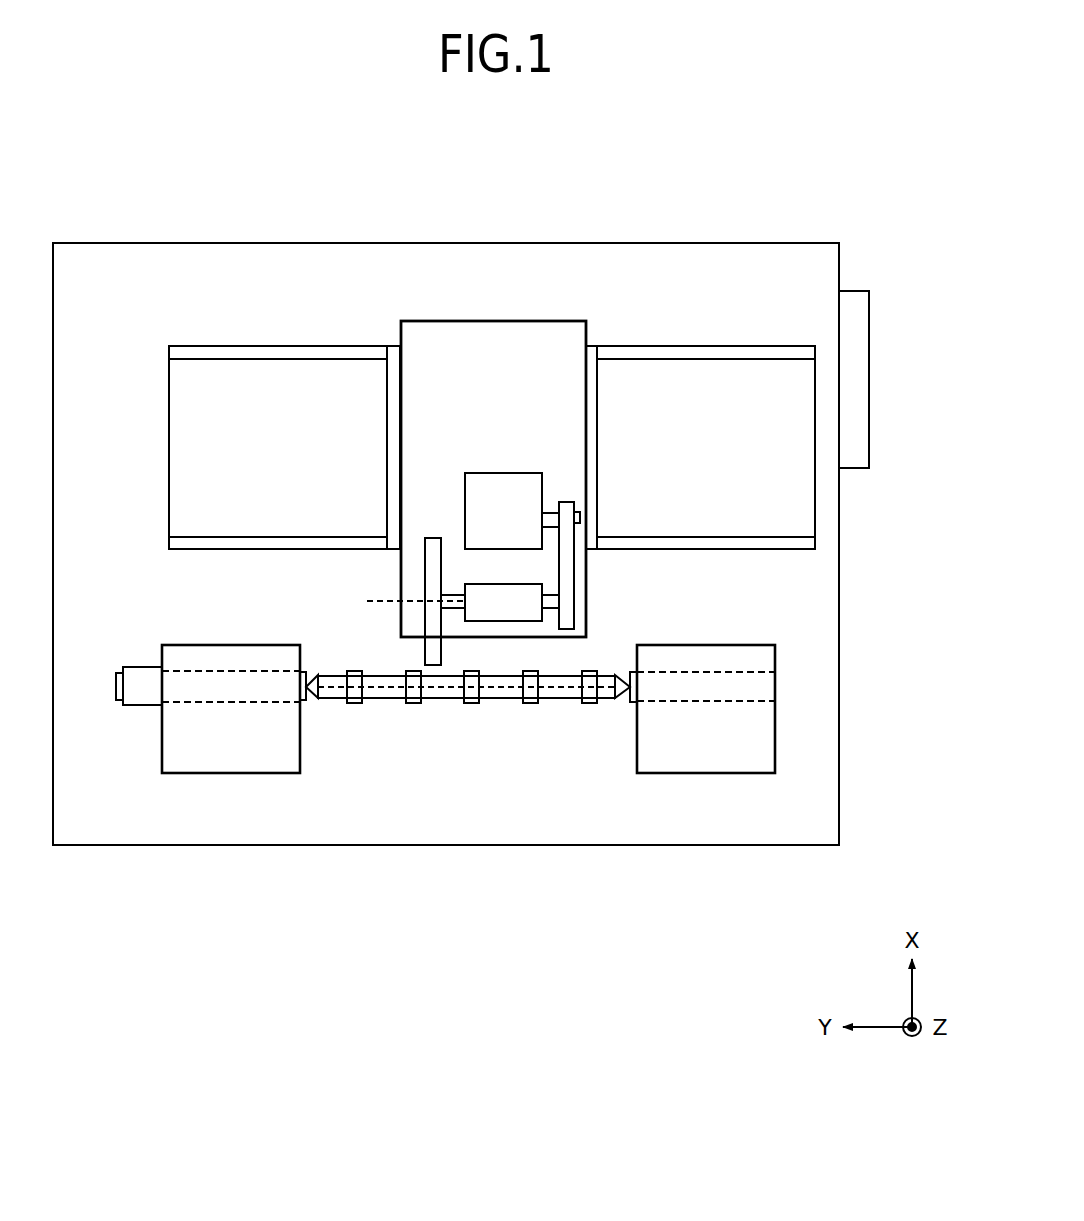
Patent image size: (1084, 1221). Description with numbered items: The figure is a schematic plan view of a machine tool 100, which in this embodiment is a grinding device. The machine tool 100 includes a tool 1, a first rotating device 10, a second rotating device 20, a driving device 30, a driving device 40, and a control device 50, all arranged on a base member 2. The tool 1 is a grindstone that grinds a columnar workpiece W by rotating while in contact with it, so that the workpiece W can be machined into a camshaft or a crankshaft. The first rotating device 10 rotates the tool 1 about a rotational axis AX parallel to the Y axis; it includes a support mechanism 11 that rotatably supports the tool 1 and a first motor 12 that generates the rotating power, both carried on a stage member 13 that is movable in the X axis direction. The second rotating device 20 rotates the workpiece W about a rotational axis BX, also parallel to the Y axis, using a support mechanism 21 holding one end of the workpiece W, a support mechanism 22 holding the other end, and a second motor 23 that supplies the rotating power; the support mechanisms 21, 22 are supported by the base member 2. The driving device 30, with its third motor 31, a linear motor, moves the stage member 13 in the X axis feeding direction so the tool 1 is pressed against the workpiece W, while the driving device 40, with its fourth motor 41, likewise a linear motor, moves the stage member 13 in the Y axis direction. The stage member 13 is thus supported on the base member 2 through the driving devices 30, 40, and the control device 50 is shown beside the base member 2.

The machine tool 100 is at (830, 169).
The base member 2 is at (720, 243).
The control device 50 is at (873, 378).
The driving device 40 is at (318, 340).
The fourth motor 41 is at (232, 351).
The driving device 30 is at (616, 467).
The third motor 31 is at (387, 435).
The stage member 13 is at (552, 337).
The first rotating device 10 is at (552, 468).
The first motor 12 is at (505, 471).
The support mechanism 11 is at (521, 623).
The tool 1 is at (424, 651).
The rotational axis AX is at (369, 599).
The second rotating device 20 is at (319, 731).
The support mechanism 21 is at (227, 776).
The support mechanism 22 is at (706, 776).
The second motor 23 is at (135, 666).
The workpiece W is at (436, 700).
The rotational axis BX is at (507, 704).